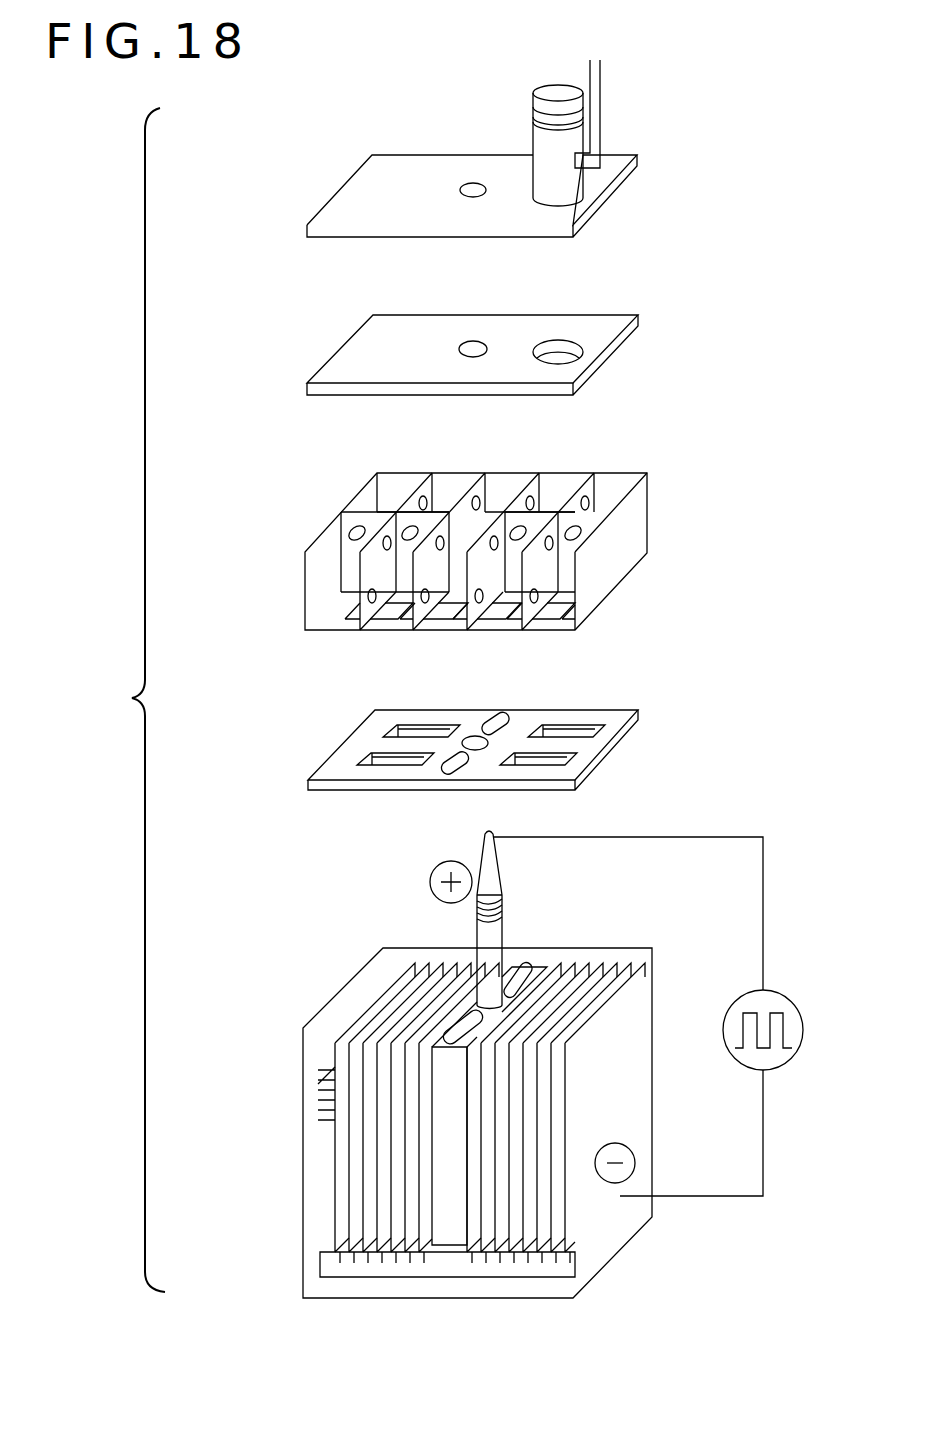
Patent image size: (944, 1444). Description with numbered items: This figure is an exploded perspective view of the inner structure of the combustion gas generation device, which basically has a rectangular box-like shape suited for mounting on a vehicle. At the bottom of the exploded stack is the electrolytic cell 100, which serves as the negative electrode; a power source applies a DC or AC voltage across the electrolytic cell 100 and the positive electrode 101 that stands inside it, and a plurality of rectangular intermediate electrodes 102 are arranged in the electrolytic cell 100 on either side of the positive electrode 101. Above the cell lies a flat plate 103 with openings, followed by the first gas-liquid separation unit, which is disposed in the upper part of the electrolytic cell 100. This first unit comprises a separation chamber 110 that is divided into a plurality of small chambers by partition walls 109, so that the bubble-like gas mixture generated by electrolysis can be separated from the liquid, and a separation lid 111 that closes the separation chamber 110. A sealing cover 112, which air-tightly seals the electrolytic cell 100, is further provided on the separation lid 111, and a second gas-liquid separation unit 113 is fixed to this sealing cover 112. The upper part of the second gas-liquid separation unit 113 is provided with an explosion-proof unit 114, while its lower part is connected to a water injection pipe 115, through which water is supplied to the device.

The electrolytic cell 100 is at (605, 1235).
The positive electrode 101 is at (440, 1152).
The intermediate electrodes 102 is at (335, 1212).
The partition plate 103 is at (605, 718).
The partition walls 109 is at (537, 468).
The separation chamber 110 is at (638, 502).
The separation lid 111 is at (605, 323).
The sealing cover 112 is at (345, 203).
The second gas-liquid separation unit 113 is at (540, 137).
The explosion-proof unit 114 is at (543, 93).
The water injection pipe 115 is at (597, 120).